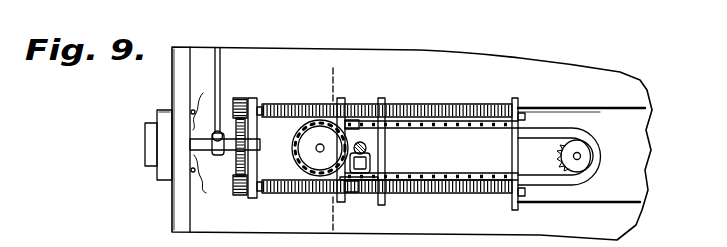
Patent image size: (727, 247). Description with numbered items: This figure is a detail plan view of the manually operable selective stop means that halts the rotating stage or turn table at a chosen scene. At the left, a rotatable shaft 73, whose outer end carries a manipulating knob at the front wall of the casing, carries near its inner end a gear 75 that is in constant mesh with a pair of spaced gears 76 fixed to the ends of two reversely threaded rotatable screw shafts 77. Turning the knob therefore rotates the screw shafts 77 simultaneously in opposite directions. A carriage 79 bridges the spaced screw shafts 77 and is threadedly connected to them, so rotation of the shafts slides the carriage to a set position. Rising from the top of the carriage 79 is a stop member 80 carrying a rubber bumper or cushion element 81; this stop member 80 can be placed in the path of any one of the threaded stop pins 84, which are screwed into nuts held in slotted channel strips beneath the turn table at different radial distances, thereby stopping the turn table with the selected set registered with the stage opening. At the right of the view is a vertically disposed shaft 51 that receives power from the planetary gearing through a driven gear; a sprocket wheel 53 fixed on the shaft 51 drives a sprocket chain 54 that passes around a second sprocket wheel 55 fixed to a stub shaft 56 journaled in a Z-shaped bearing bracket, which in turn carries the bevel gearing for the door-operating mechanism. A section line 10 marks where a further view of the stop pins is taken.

The section line 10 is at (346, 84).
The shaft 51 is at (577, 160).
The sprocket wheel 53 is at (592, 156).
The sprocket chain 54 is at (467, 130).
The sprocket wheel 55 is at (313, 155).
The stub shaft 56 is at (318, 146).
The rotatable shaft 73 is at (228, 153).
The gear 75 is at (226, 133).
The spaced gears 76 is at (247, 98).
The reversely threaded rotatable screw shafts 77 is at (424, 104).
The carriage 79 is at (372, 152).
The stop member 80 is at (352, 192).
The rubber bumper or cushion element 81 is at (366, 147).
The threaded stop pins 84 is at (356, 120).